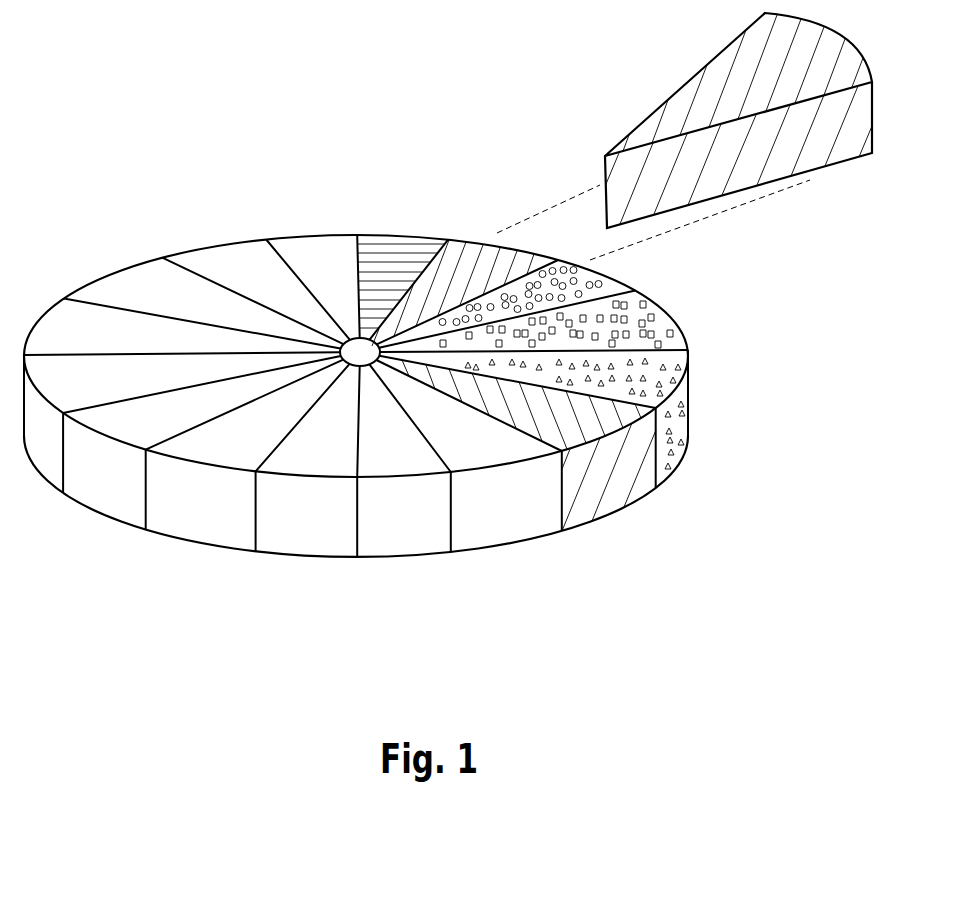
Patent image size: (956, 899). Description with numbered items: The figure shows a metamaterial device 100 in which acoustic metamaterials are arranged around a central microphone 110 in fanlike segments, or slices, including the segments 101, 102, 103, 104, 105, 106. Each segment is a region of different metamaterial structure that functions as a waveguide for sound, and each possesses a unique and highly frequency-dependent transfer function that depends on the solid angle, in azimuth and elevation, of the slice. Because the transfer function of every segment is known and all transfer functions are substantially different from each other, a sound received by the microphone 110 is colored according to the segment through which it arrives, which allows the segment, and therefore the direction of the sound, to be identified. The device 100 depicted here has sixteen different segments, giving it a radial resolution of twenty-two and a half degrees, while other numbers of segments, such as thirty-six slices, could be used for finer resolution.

The metamaterial device 100 is at (190, 86).
The segment 101 is at (593, 520).
The segment 102 is at (680, 460).
The segment 103 is at (670, 318).
The segment 104 is at (612, 274).
The segment 105 is at (465, 243).
The segment 106 is at (386, 236).
The microphone 110 is at (358, 346).